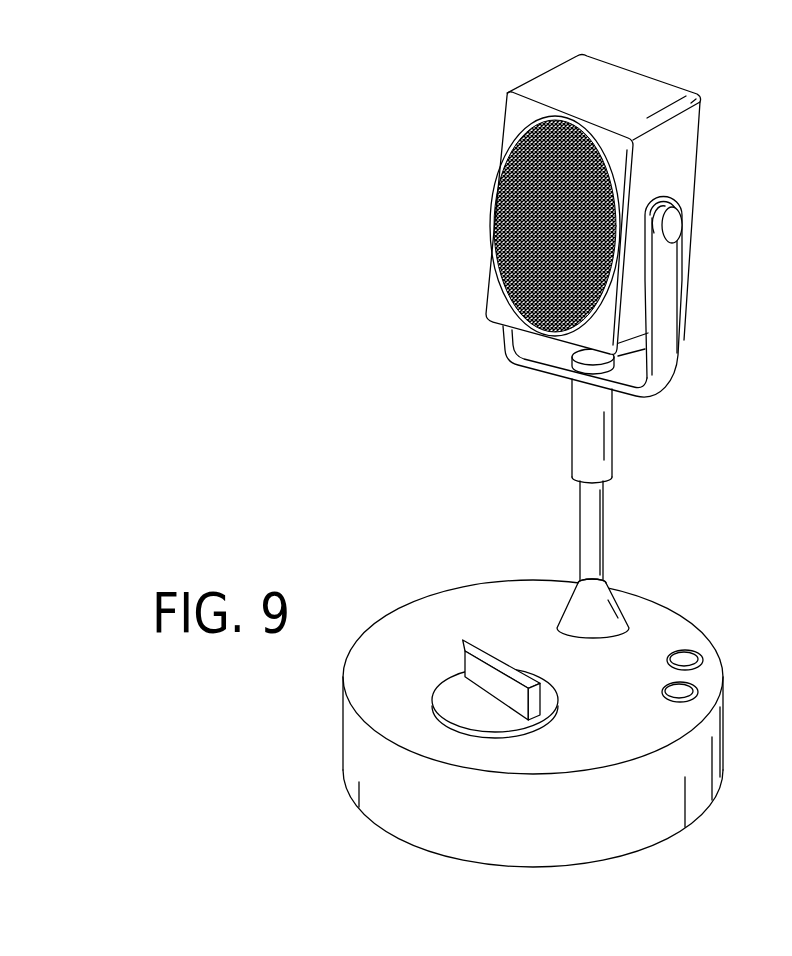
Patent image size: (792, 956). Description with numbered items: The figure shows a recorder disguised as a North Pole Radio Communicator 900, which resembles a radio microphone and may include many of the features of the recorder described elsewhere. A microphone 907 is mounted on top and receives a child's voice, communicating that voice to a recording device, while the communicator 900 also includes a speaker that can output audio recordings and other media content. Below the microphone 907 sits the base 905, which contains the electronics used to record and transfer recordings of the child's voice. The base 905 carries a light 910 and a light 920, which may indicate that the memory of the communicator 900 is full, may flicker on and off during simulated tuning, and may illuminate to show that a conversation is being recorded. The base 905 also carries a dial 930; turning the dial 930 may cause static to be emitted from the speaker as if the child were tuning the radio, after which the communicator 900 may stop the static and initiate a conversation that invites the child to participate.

The North Pole Radio Communicator 900 is at (354, 239).
The base 905 is at (342, 718).
The microphone 907 is at (657, 82).
The light 910 is at (687, 660).
The light 920 is at (671, 692).
The dial 930 is at (452, 683).